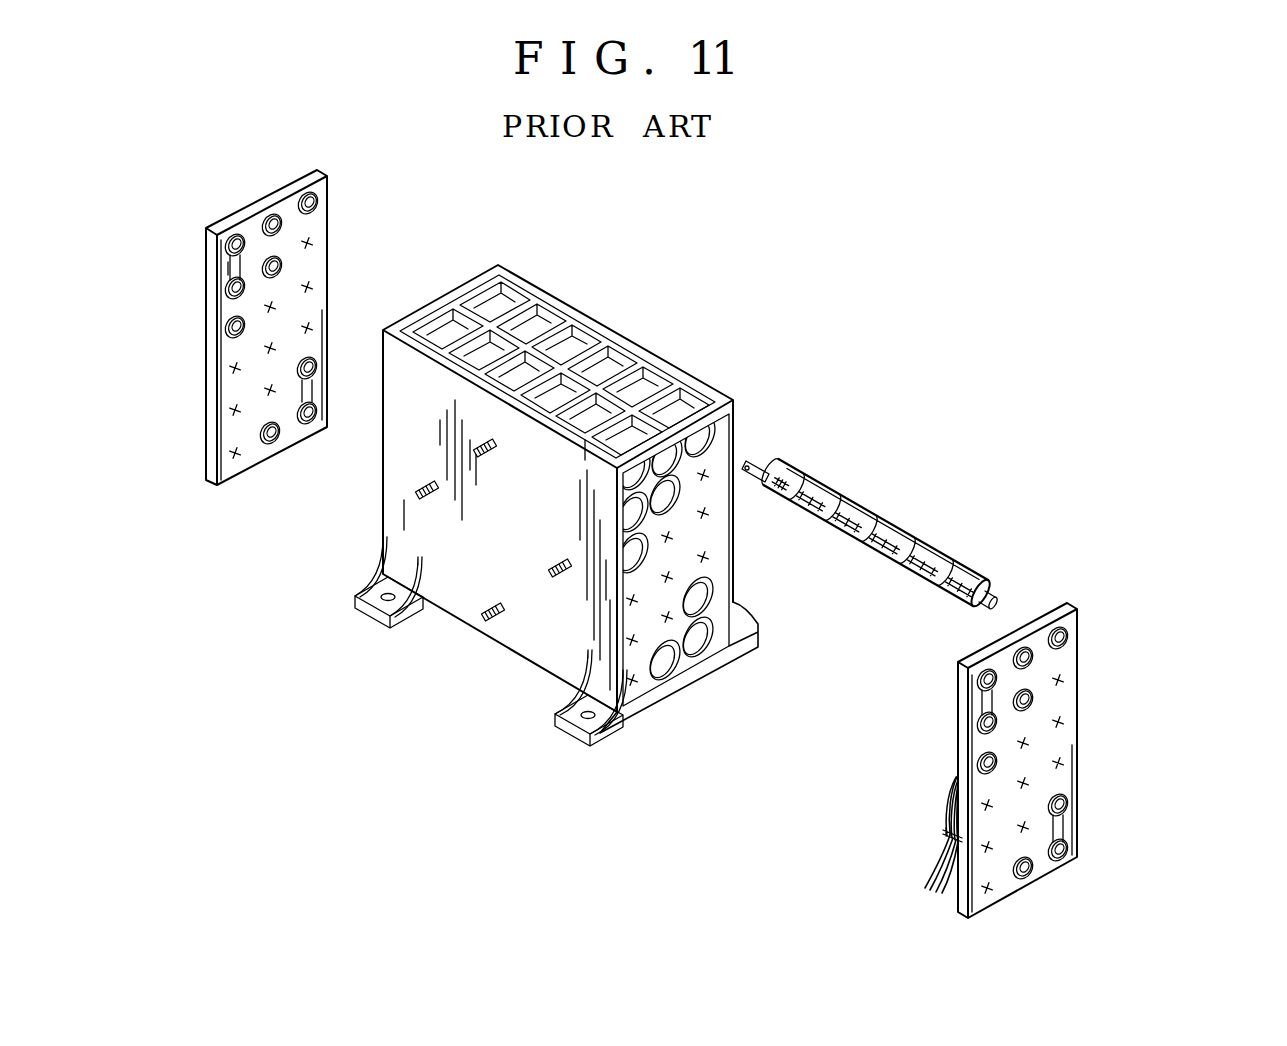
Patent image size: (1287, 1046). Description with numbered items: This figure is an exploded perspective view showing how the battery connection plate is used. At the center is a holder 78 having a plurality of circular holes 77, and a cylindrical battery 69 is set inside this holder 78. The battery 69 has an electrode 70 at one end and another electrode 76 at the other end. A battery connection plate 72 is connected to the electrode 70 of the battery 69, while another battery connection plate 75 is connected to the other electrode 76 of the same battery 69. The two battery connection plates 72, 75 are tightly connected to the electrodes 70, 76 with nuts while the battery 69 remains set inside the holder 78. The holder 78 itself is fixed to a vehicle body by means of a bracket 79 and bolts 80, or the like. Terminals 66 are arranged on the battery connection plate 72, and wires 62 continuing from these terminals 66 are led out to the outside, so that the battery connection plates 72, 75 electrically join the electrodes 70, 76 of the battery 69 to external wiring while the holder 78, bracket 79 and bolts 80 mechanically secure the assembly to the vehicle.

The wires 62 is at (940, 866).
The terminals 66 is at (1032, 662).
The cylindrical battery 69 is at (912, 492).
The electrode 70 is at (1000, 598).
The battery connection plate 72 is at (1074, 760).
The battery connection plate 75 is at (327, 232).
The electrode 76 is at (758, 467).
The circular hole 77 is at (712, 598).
The holder 78 is at (593, 534).
The bracket 79 is at (573, 727).
The bolts 80 is at (490, 620).